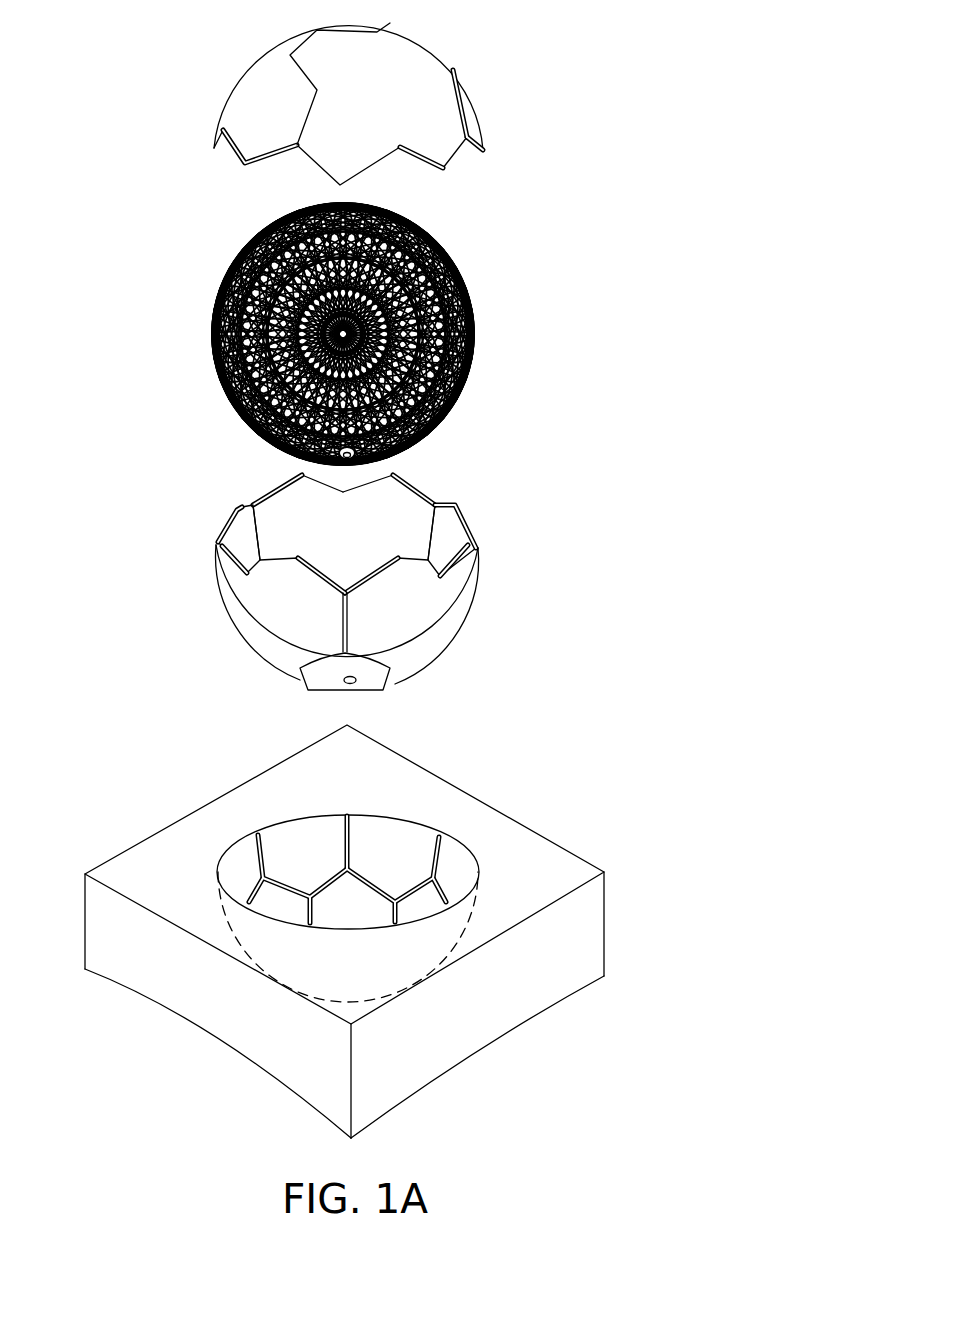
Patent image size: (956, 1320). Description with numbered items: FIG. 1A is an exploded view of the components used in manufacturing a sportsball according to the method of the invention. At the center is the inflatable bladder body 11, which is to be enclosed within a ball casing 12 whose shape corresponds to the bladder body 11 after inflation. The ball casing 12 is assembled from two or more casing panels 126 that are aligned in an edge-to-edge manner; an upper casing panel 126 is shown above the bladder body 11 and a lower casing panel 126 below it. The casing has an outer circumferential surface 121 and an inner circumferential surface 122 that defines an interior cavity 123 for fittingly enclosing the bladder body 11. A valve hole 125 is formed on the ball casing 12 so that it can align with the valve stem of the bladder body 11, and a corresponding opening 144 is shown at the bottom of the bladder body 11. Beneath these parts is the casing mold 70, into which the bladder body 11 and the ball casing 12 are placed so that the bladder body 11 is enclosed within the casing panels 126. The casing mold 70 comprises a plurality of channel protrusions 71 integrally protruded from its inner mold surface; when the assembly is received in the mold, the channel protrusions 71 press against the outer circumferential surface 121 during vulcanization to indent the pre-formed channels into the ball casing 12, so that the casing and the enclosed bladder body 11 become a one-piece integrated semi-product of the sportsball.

The inflatable bladder body 11 is at (473, 302).
The ball casing 12 is at (386, 580).
The outer circumferential surface 121 is at (265, 620).
The inner circumferential surface 122 is at (398, 522).
The interior cavity 123 is at (298, 532).
The valve hole 125 is at (345, 682).
The casing panel 126 is at (412, 67).
The hole 144 is at (287, 467).
The casing mold 70 is at (189, 971).
The channel protrusion 71 is at (349, 844).